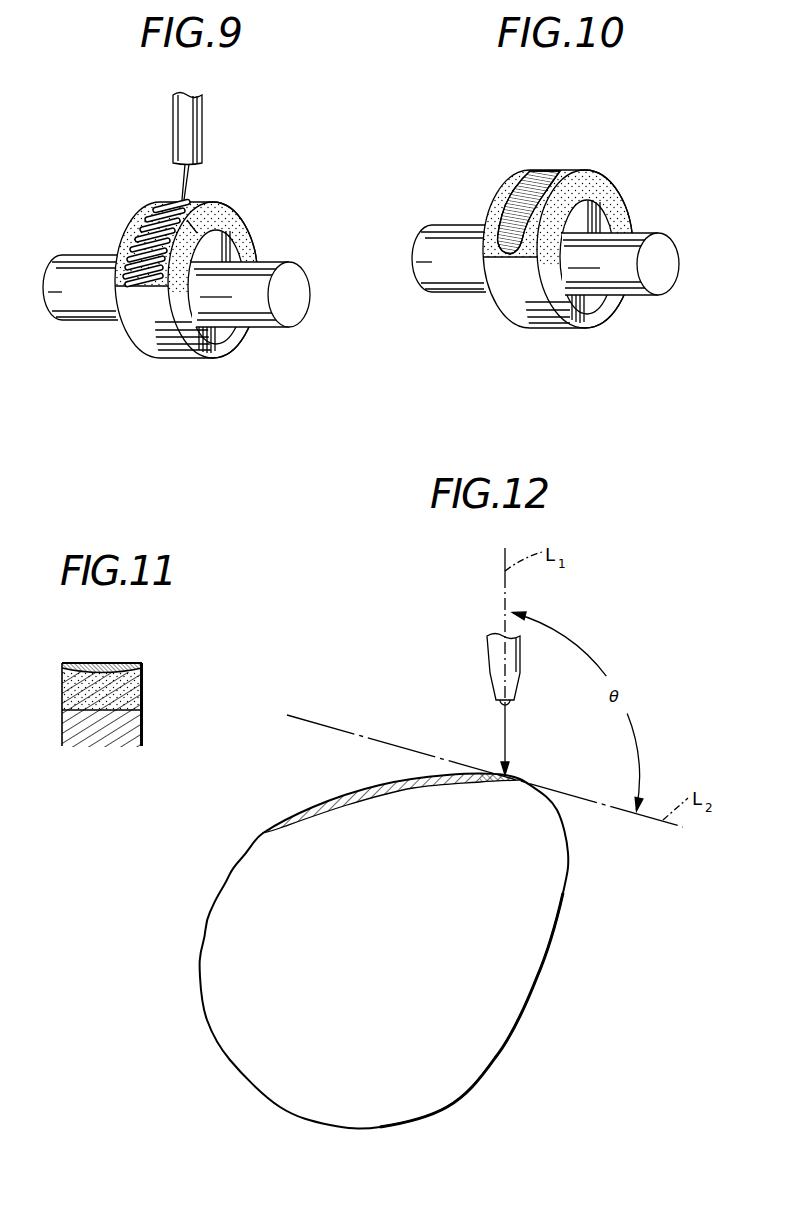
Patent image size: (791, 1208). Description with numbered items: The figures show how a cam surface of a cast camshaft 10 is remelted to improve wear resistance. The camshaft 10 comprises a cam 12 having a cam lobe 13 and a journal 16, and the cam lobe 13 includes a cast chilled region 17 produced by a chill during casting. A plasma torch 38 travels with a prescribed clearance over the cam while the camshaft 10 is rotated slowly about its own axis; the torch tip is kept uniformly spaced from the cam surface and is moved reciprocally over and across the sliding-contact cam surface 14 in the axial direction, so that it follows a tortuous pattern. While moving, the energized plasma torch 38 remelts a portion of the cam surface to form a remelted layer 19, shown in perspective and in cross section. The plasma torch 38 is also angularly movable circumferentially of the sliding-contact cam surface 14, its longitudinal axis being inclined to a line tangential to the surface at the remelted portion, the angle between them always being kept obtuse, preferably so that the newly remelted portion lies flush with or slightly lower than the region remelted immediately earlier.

In FIG. 9, the camshaft 10 is at (175, 285).
In FIG. 10, the camshaft 10 is at (543, 249).
In FIG. 12, the camshaft 10 is at (384, 966).
In FIG. 9, the cam 12 is at (231, 338).
In FIG. 10, the cam 12 is at (578, 307).
In FIG. 9, the cam lobe 13 is at (223, 222).
In FIG. 10, the cam lobe 13 is at (612, 196).
In FIG. 9, the sliding-contact cam surface 14 is at (140, 318).
In FIG. 10, the sliding-contact cam surface 14 is at (533, 317).
In FIG. 11, the sliding-contact cam surface 14 is at (130, 734).
In FIG. 9, the journal 16 is at (77, 267).
In FIG. 10, the journal 16 is at (435, 266).
In FIG. 9, the cast chilled region 17 is at (158, 203).
In FIG. 10, the cast chilled region 17 is at (498, 207).
In FIG. 11, the cast chilled region 17 is at (143, 691).
In FIG. 12, the cast chilled region 17 is at (370, 795).
In FIG. 10, the remelted layer 19 is at (543, 171).
In FIG. 11, the remelted layer 19 is at (108, 663).
In FIG. 12, the remelted layer 19 is at (503, 781).
In FIG. 9, the plasma torch 38 is at (198, 137).
In FIG. 12, the plasma torch 38 is at (489, 662).